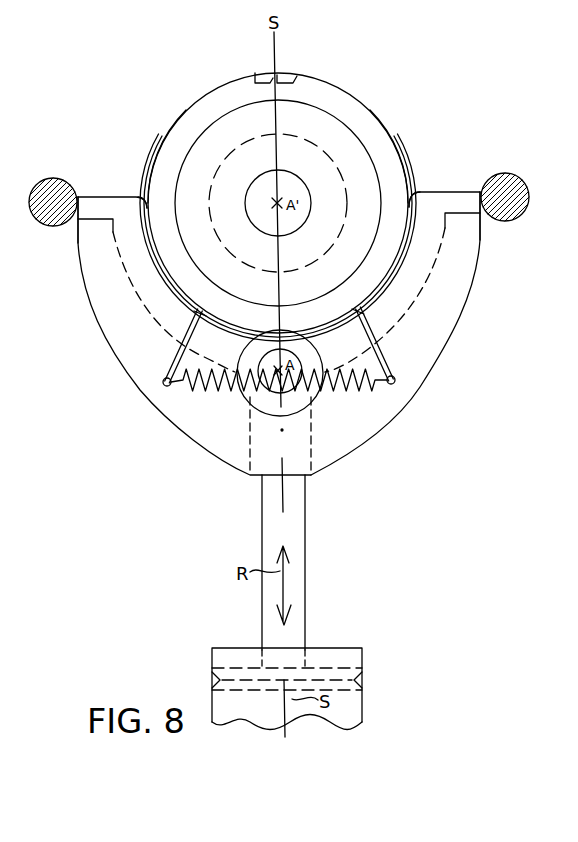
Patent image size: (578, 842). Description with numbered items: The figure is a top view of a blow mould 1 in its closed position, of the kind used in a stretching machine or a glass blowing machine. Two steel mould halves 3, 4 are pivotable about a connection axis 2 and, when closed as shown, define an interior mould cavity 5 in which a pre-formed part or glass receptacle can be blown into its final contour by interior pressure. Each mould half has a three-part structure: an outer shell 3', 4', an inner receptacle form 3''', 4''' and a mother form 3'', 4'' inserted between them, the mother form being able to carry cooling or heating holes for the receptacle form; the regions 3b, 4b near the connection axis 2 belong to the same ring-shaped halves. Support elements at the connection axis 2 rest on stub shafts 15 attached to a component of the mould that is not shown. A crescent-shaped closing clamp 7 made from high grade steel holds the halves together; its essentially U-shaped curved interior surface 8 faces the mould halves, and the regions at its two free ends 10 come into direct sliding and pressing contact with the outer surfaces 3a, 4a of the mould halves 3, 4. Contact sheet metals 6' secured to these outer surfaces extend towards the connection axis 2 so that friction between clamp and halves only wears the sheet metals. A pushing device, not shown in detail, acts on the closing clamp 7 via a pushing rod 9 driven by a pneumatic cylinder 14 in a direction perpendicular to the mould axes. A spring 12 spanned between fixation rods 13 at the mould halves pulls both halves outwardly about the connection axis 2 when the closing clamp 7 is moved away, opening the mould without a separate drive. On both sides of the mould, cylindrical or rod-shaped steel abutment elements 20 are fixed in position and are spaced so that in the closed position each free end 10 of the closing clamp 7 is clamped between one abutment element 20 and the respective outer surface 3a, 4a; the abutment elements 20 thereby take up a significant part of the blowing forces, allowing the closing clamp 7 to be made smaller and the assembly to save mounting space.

The blow mould 1 is at (130, 607).
The connection axis 2 is at (258, 403).
The mould half 3 is at (283, 203).
The outer surface 3a is at (369, 130).
The ring tab 3b is at (297, 78).
The outer shell 3' is at (326, 78).
The mother form 3'' is at (355, 87).
The inner receptacle form 3''' is at (385, 91).
The mould half 4 is at (257, 203).
The outer surface 4a is at (184, 112).
The ring tab 4b is at (255, 78).
The outer shell 4' is at (228, 80).
The ring segment 4'' is at (213, 83).
The inner receptacle form 4''' is at (184, 103).
The interior mould cavity 5 is at (256, 174).
The contact sheet metal 6' is at (279, 237).
The closing clamp 7 is at (455, 333).
The interior surface 8 is at (133, 256).
The pushing rod 9 is at (300, 508).
The free ends 10 is at (97, 208).
The spring 12 is at (190, 382).
The fixation rods 13 is at (160, 325).
The pneumatic cylinder 14 is at (344, 660).
The stub shafts 15 is at (138, 196).
The abutment elements 20 is at (40, 190).